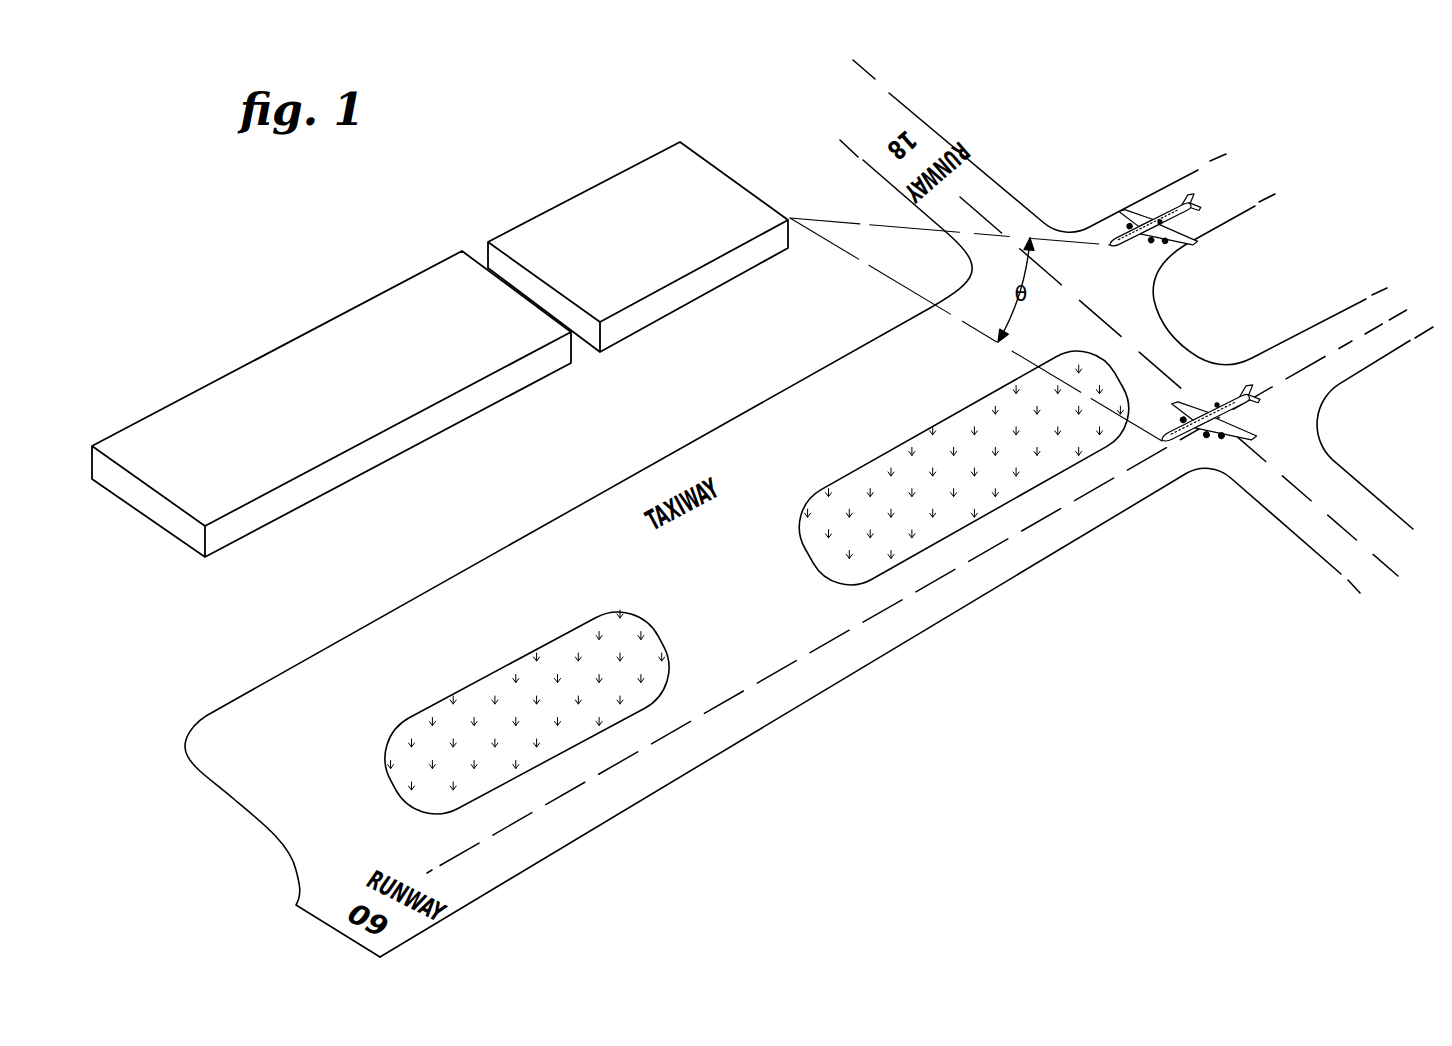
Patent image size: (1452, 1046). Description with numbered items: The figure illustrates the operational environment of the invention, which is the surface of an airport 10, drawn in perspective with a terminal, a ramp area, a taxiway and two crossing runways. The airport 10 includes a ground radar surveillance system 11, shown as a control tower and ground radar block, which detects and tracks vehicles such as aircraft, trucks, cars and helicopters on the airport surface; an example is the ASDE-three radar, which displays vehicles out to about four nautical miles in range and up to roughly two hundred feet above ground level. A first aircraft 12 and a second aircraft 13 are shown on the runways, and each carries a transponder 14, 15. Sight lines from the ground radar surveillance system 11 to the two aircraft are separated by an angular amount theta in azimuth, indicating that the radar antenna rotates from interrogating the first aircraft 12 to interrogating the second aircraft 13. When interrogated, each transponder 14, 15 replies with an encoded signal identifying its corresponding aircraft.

The airport 10 is at (369, 235).
The ground radar surveillance system 11 is at (585, 192).
The first aircraft 12 is at (1235, 431).
The second aircraft 13 is at (1178, 238).
The transponder 14 is at (1217, 405).
The transponder 15 is at (1160, 222).